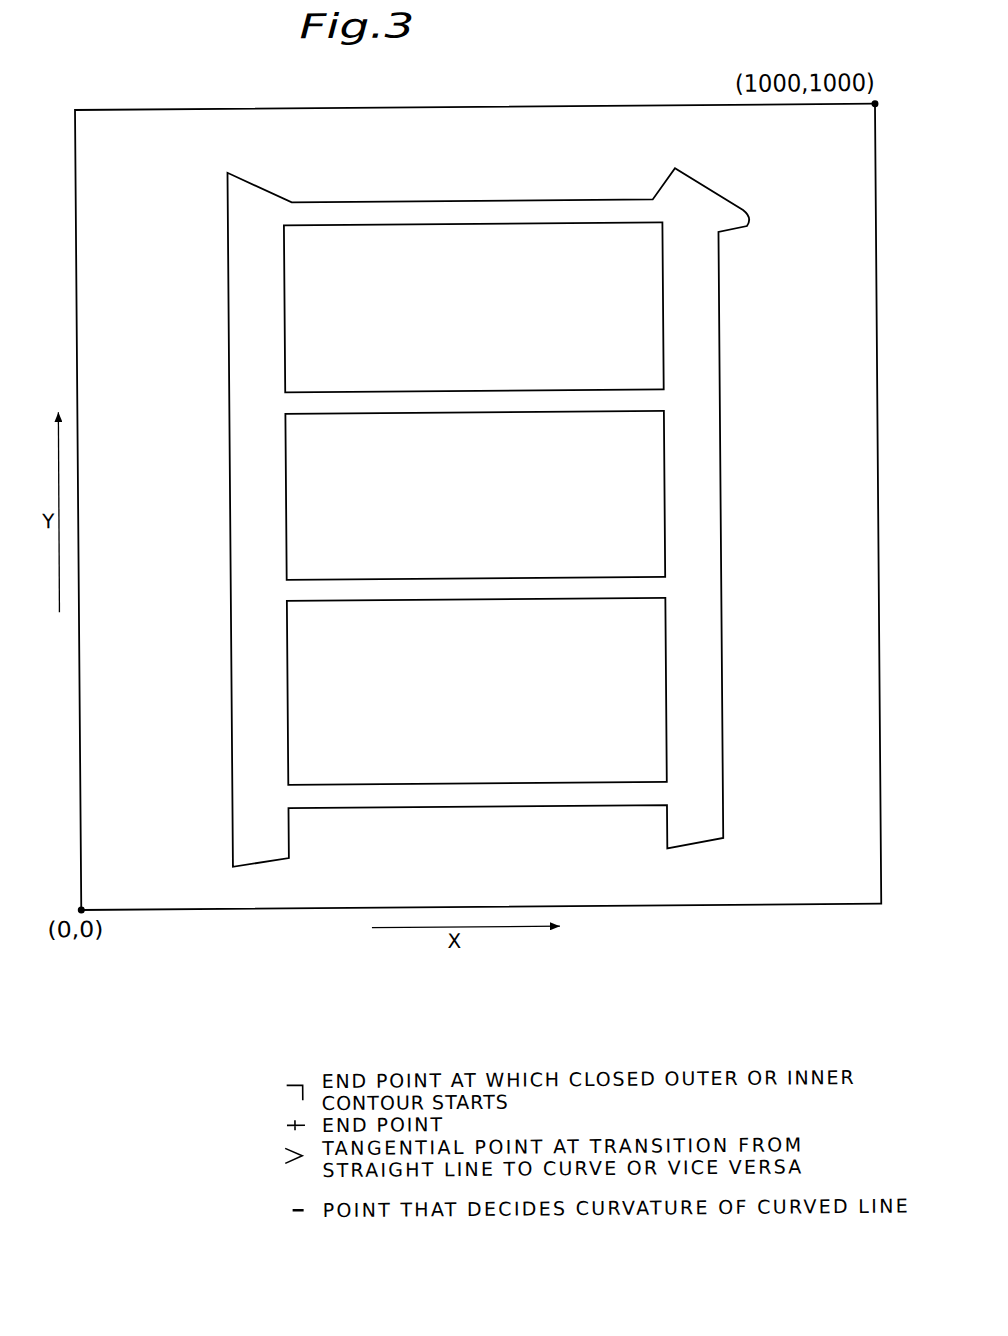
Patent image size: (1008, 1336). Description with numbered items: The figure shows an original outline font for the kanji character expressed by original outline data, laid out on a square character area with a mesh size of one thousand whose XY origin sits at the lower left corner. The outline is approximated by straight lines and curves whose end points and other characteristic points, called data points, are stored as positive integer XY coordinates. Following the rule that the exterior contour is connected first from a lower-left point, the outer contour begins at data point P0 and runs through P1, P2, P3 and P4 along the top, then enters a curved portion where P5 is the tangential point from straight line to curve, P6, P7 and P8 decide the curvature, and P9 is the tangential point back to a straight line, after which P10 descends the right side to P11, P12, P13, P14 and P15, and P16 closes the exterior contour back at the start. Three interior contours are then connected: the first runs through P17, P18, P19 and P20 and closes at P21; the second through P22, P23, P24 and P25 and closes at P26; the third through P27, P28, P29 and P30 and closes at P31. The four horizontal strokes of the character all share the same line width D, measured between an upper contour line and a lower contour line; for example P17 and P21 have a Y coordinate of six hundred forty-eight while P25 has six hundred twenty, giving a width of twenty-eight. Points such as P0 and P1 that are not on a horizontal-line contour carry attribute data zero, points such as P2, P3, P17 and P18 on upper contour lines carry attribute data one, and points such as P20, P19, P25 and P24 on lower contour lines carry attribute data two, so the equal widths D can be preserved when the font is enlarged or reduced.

The line width D is at (365, 255).
The data point P0 is at (237, 852).
The data point P1 is at (226, 172).
The data point P2 is at (292, 202).
The data point P3 is at (652, 203).
The data point P4 is at (675, 172).
The data point P5 is at (735, 203).
The data point P6 is at (748, 224).
The data point P7 is at (748, 230).
The data point P8 is at (746, 235).
The data point P9 is at (738, 238).
The data point P10 is at (732, 249).
The data point P11 is at (720, 845).
The data point P12 is at (662, 854).
The data point P13 is at (662, 812).
The data point P14 is at (284, 810).
The data point P15 is at (287, 864).
The data point P16 is at (247, 881).
The data point P17 is at (272, 405).
The data point P18 is at (660, 392).
The data point P19 is at (661, 232).
The data point P20 is at (284, 228).
The data point P21 is at (283, 394).
The data point P22 is at (272, 592).
The data point P23 is at (658, 580).
The data point P24 is at (660, 418).
The data point P25 is at (283, 416).
The data point P26 is at (283, 582).
The data point P27 is at (283, 602).
The data point P28 is at (283, 786).
The data point P29 is at (662, 786).
The data point P30 is at (658, 606).
The data point P31 is at (283, 602).